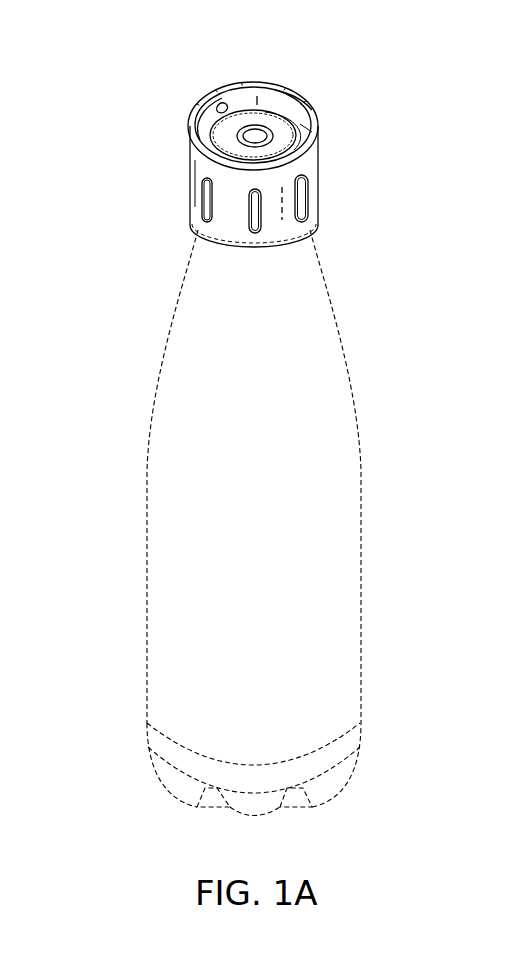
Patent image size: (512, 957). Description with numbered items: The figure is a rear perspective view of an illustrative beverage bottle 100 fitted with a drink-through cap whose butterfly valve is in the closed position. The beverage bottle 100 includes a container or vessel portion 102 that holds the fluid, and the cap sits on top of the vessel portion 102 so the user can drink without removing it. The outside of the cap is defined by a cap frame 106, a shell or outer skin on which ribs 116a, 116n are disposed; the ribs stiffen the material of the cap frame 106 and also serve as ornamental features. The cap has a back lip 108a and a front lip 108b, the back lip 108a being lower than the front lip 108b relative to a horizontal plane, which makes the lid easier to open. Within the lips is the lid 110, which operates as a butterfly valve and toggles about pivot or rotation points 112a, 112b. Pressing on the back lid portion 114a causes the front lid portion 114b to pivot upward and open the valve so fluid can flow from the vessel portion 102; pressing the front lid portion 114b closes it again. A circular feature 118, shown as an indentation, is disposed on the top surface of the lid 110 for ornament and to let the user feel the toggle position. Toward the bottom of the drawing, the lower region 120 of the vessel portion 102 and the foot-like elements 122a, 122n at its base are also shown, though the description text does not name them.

The beverage bottle 100 is at (246, 49).
The vessel portion 102 is at (306, 542).
The cap frame 106 is at (264, 167).
The back lip 108a is at (222, 170).
The front lip 108b is at (298, 88).
The lid 110 is at (237, 135).
The pivot point 112a is at (223, 113).
The pivot point 112b is at (310, 127).
The back lid portion 114a is at (238, 143).
The front lid portion 114b is at (282, 135).
The rib 116a is at (255, 228).
The rib 116n is at (302, 200).
The feature 118 is at (263, 137).
The base 120 is at (306, 762).
The first foot 122a is at (217, 807).
The nth foot 122n is at (292, 807).